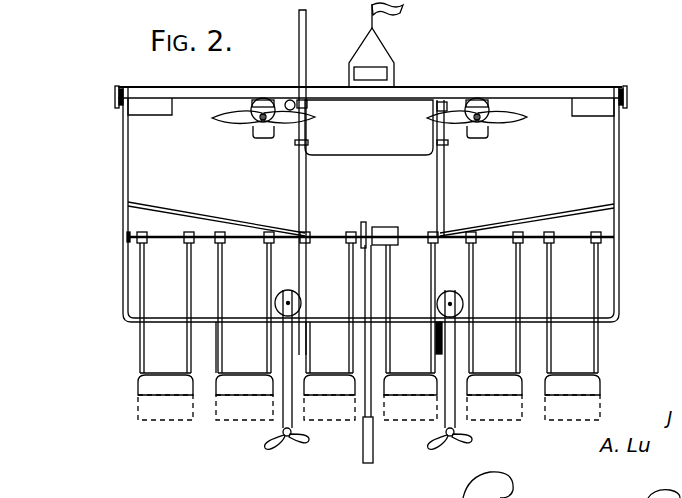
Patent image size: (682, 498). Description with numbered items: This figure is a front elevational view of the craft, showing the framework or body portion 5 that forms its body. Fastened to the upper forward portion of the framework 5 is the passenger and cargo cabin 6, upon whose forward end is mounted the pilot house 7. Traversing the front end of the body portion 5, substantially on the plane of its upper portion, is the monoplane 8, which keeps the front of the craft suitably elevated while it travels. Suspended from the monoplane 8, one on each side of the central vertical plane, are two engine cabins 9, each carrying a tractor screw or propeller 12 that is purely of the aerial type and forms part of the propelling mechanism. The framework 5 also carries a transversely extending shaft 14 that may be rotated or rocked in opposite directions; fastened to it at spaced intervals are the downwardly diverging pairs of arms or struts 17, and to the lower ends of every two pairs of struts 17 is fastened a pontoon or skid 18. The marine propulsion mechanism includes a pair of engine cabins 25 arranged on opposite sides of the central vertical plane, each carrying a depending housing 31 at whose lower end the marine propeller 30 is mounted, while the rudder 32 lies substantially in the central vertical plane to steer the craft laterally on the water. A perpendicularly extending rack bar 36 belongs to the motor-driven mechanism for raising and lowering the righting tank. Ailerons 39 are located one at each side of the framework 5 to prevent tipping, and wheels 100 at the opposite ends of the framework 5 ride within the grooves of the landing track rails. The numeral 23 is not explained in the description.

The framework or body portion 5 is at (114, 178).
The passenger and cargo cabin 6 is at (372, 168).
The pilot house 7 is at (376, 45).
The monoplane 8 is at (513, 89).
The engine cabin 9 is at (262, 128).
The tractor screw or propeller 12 is at (233, 118).
The transversely extending shaft 14 is at (175, 239).
The arms or struts 17 is at (145, 301).
The pontoon or skid 18 is at (247, 408).
The rod 23 is at (233, 332).
The engine cabin 25 is at (465, 303).
The marine propeller 30 is at (299, 448).
The depending housing 31 is at (259, 345).
The rudder 32 is at (365, 465).
The rack bar 36 is at (300, 72).
The aileron 39 is at (156, 108).
The wheels 100 is at (114, 100).